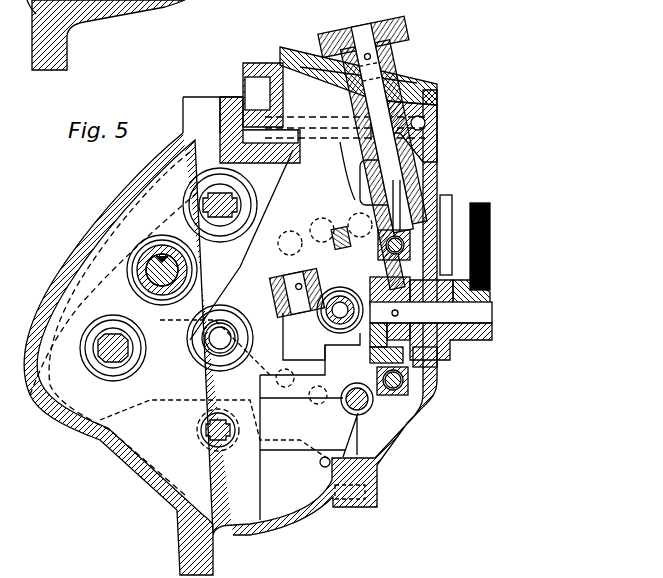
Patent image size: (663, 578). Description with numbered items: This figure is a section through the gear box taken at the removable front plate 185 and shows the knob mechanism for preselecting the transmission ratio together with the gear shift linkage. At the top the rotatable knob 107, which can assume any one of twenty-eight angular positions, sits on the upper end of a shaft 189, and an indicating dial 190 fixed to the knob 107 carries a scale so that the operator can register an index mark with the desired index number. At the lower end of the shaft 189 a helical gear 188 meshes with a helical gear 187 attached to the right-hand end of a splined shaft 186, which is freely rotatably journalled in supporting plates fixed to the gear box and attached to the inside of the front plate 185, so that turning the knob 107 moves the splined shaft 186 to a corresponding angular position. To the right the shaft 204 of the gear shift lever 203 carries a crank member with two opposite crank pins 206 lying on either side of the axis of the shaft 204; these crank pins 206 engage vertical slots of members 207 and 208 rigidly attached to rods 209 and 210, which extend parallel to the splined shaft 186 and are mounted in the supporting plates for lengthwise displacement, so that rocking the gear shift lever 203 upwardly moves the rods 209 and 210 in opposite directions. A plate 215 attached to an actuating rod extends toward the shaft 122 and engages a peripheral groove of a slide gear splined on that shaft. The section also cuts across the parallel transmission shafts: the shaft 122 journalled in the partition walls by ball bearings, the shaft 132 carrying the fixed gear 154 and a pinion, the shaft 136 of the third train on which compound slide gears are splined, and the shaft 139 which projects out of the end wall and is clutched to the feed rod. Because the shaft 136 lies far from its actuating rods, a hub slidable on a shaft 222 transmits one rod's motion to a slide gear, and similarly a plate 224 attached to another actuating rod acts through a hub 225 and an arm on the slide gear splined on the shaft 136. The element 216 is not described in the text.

The rotatable knob 107 is at (405, 46).
The indicating dial 190 is at (420, 83).
The shaft 189 is at (360, 145).
The member 207 is at (440, 240).
The shaft 204 is at (491, 310).
The gear shift lever 203 is at (477, 333).
The rod 209 is at (387, 230).
The plate 215 is at (373, 268).
The hub 216 is at (378, 273).
The helical gear 188 is at (296, 281).
The splined shaft 186 is at (320, 320).
The helical gear 187 is at (338, 345).
The rod 210 is at (397, 394).
The crank pins 206 is at (405, 362).
The member 208 is at (408, 375).
The removable front plate 185 is at (425, 438).
The shaft 122 is at (207, 203).
The gear 154 is at (183, 264).
The shaft 132 is at (150, 273).
The shaft 136 is at (97, 344).
The shaft 139 is at (213, 341).
The shaft 222 is at (200, 428).
The hub 225 is at (247, 427).
The plate 224 is at (287, 446).